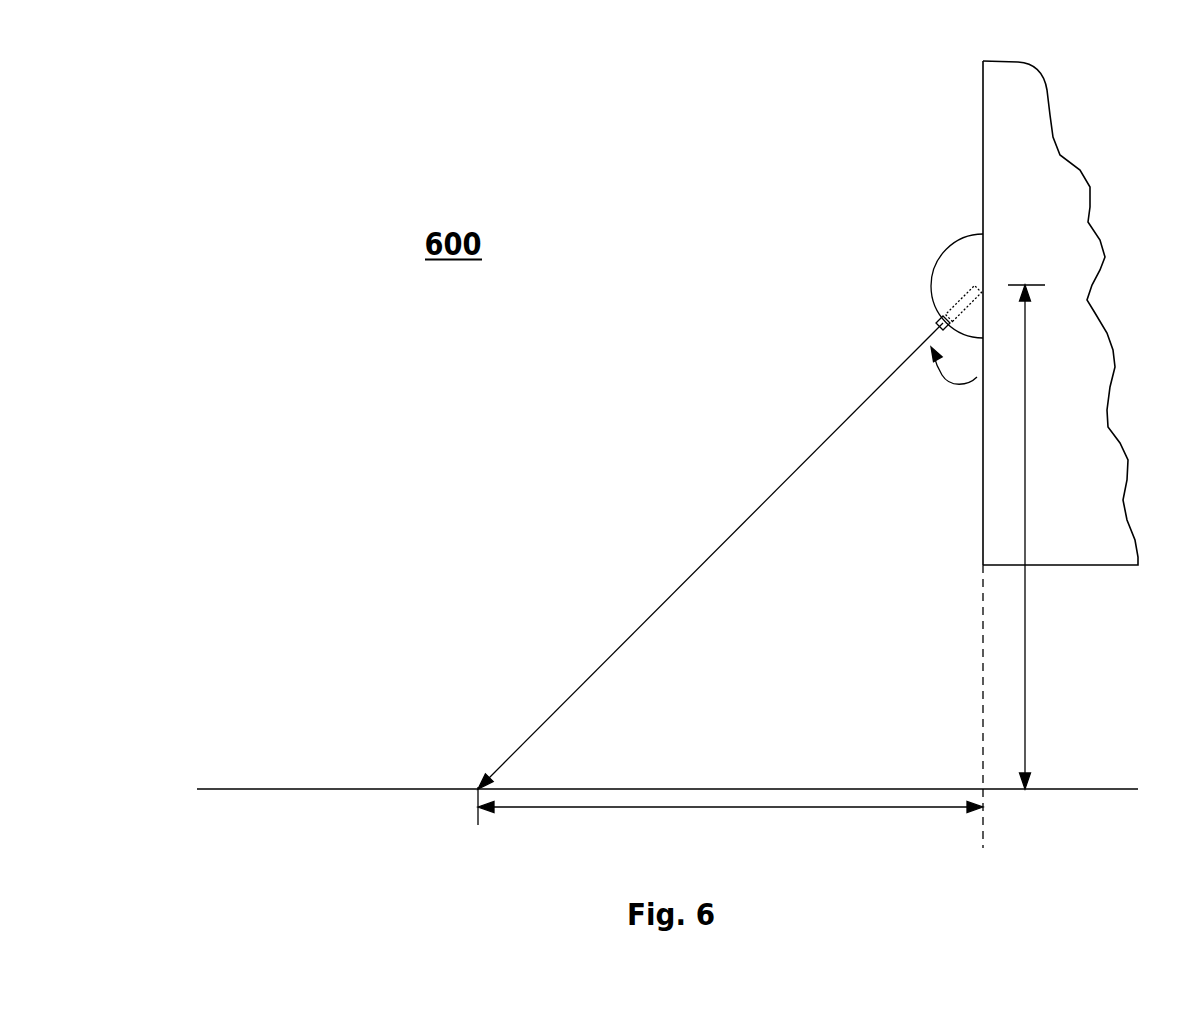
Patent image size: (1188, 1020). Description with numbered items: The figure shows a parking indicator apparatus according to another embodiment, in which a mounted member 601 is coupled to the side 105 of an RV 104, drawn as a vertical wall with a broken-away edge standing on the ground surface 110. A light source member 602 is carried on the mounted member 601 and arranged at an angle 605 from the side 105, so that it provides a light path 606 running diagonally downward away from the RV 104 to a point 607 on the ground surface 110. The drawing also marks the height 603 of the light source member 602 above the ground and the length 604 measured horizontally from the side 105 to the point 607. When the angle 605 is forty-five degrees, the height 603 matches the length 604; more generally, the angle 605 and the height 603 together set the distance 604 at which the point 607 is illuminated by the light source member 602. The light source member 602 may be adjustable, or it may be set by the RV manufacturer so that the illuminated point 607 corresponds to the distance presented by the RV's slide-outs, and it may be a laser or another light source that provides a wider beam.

The RV 104 is at (1029, 113).
The side of RV 105 is at (968, 467).
The floor / ground surface 110 is at (322, 789).
The mounted member 601 is at (941, 278).
The light source member 602 is at (958, 305).
The height 603 is at (1020, 532).
The length 604 is at (730, 819).
The angle 605 is at (950, 373).
The light path 606 is at (673, 576).
The point 607 is at (478, 789).